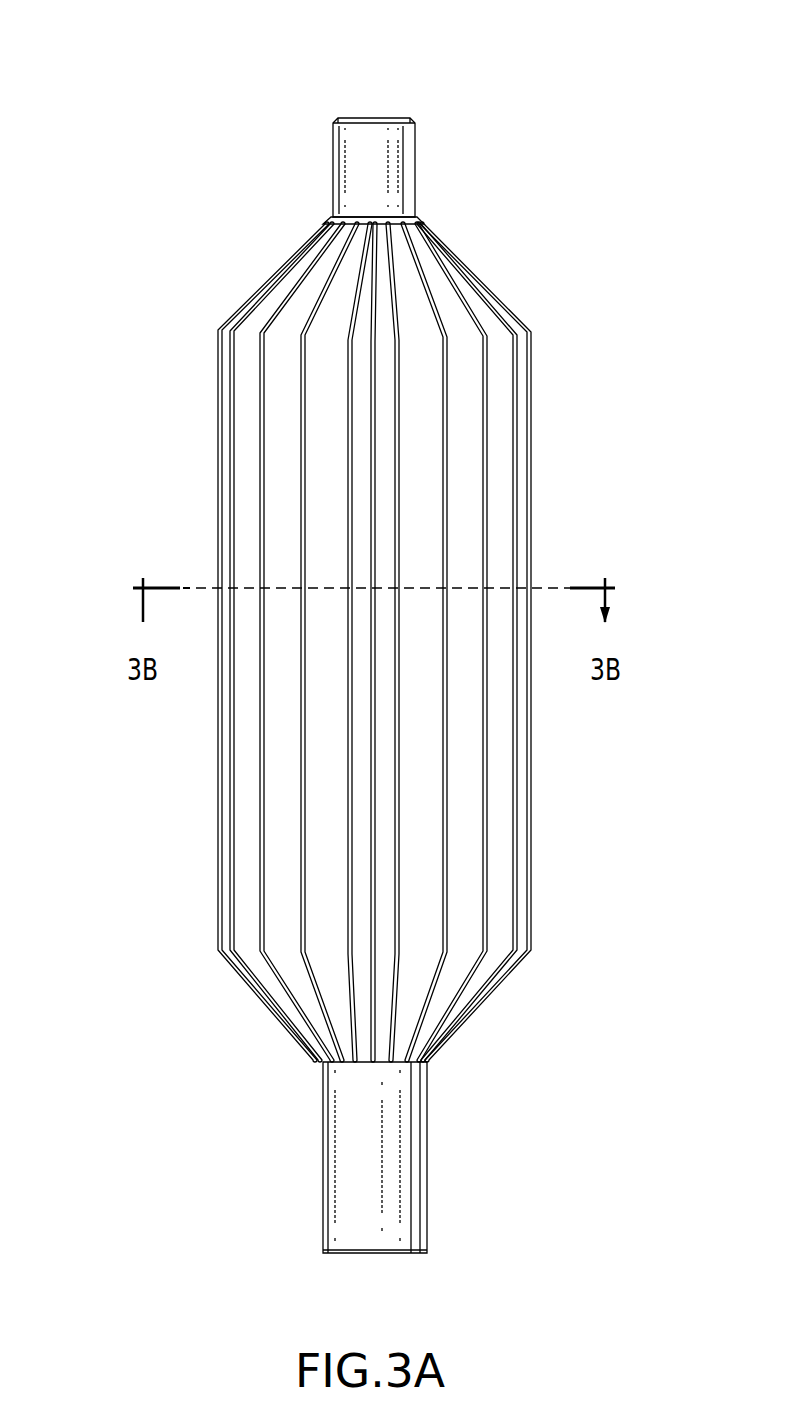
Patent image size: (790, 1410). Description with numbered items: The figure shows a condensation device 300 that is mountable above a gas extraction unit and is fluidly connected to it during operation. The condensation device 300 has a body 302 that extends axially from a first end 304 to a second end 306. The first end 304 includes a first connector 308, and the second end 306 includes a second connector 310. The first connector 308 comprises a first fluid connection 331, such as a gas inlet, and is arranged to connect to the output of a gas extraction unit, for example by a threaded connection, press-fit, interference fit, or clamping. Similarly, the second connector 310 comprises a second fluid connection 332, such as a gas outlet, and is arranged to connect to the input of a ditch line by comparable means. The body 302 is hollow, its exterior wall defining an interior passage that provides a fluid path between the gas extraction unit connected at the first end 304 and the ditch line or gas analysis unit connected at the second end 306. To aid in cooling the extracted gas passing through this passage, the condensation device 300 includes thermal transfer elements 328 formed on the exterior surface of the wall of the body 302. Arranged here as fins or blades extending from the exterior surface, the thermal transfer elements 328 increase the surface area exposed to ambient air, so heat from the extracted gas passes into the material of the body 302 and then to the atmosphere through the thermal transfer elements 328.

The condensation device 300 is at (125, 268).
The body 302 is at (308, 1060).
The first end 304 is at (436, 1253).
The second end 306 is at (424, 180).
The first connector 308 is at (347, 1197).
The second connector 310 is at (362, 193).
The thermal transfer elements 328 is at (518, 360).
The first fluid connection 331 is at (344, 1263).
The second fluid connection 332 is at (365, 105).